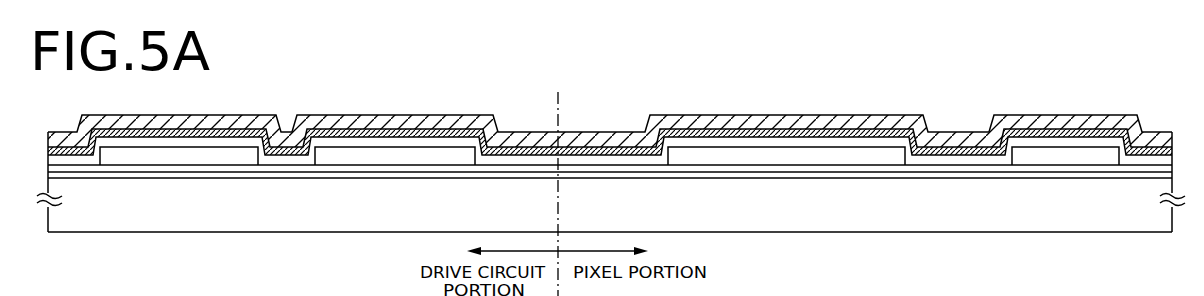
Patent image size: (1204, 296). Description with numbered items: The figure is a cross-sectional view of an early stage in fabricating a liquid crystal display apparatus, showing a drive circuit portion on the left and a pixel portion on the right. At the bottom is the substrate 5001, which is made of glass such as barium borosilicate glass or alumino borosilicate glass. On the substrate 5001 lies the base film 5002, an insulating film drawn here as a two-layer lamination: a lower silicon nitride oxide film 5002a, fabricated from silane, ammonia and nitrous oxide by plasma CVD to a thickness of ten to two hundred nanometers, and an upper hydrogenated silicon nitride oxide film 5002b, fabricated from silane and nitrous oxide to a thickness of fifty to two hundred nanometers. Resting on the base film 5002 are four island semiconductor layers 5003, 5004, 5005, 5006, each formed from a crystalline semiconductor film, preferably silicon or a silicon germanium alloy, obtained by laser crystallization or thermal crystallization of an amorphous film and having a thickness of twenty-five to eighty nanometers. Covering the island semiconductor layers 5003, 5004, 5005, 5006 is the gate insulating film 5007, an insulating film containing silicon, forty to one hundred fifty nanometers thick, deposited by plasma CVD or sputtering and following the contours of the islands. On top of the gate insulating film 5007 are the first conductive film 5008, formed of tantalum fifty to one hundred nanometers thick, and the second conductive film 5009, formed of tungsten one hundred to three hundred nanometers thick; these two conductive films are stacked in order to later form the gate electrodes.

The substrate 5001 is at (143, 202).
The base film 5002 is at (610, 121).
The silicon nitride oxide film 5002a is at (672, 173).
The hydrogenated silicon nitride oxide film 5002b is at (625, 167).
The island semiconductor layer 5003 is at (243, 157).
The island semiconductor layer 5004 is at (347, 155).
The island semiconductor layer 5005 is at (790, 157).
The island semiconductor layer 5006 is at (1104, 155).
The gate insulating film 5007 is at (170, 142).
The first conductive film 5008 is at (877, 135).
The second conductive film 5009 is at (1000, 144).